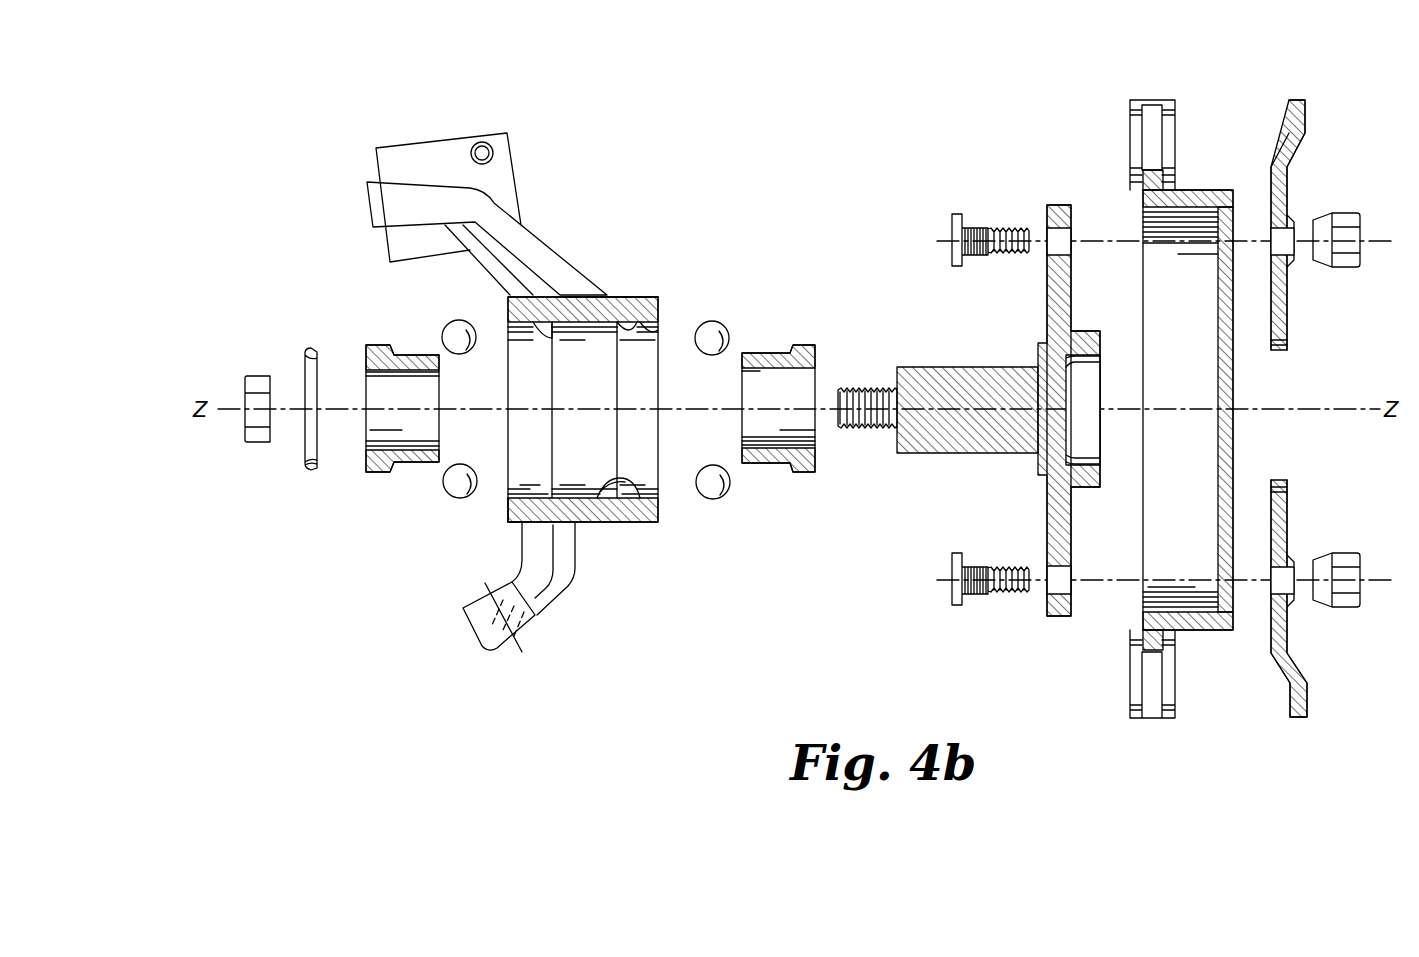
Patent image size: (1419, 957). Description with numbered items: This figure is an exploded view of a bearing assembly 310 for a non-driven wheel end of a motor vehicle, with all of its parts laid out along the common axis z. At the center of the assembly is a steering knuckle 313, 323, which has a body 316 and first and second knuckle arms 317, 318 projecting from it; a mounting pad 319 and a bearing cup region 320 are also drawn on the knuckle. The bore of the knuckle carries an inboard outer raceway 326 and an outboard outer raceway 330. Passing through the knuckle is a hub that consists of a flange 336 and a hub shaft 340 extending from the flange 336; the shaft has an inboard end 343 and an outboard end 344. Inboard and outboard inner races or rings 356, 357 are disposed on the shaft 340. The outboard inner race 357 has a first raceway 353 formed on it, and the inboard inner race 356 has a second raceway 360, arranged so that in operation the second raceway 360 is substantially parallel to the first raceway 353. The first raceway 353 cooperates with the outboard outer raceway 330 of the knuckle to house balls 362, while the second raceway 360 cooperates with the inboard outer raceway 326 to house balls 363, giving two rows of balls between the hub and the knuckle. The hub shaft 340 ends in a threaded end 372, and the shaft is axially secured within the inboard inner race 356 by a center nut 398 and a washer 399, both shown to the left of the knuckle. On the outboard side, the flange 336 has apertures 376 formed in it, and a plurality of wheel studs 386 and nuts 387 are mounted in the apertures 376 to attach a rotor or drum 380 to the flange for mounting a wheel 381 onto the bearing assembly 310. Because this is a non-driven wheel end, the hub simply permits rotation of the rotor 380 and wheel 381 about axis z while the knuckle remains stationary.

The bearing assembly 310 is at (288, 170).
The steering knuckle 313 is at (512, 513).
The body 316 is at (605, 300).
The first knuckle arm 317 is at (518, 235).
The second knuckle arm 318 is at (568, 580).
The mounting bracket 319 is at (452, 172).
The bearing cup 320 is at (636, 492).
The steering knuckle 323 is at (605, 392).
The inboard outer raceway 326 is at (552, 322).
The outboard outer raceway 330 is at (660, 323).
The flange 336 is at (1046, 288).
The hub shaft 340 is at (998, 410).
The inboard end 343 is at (911, 455).
The outboard end 344 is at (1043, 473).
The first raceway 353 is at (790, 465).
The inboard inner race 356 is at (422, 401).
The outboard inner race 357 is at (797, 401).
The second raceway 360 is at (403, 352).
The balls 362 is at (712, 328).
The balls 363 is at (452, 333).
The threaded end 372 is at (870, 430).
The apertures 376 is at (1072, 235).
The rotor or drum 380 is at (1202, 190).
The wheel 381 is at (1297, 130).
The wheel studs 386 is at (971, 226).
The nuts 387 is at (1363, 220).
The center nut 398 is at (262, 443).
The washer 399 is at (310, 352).